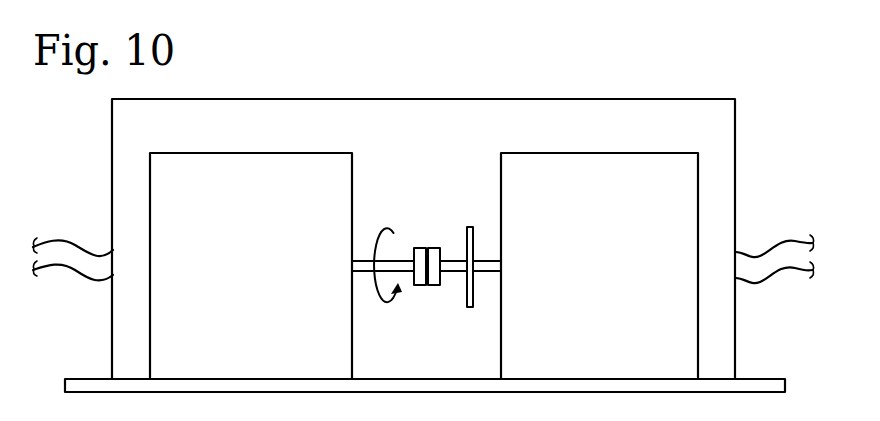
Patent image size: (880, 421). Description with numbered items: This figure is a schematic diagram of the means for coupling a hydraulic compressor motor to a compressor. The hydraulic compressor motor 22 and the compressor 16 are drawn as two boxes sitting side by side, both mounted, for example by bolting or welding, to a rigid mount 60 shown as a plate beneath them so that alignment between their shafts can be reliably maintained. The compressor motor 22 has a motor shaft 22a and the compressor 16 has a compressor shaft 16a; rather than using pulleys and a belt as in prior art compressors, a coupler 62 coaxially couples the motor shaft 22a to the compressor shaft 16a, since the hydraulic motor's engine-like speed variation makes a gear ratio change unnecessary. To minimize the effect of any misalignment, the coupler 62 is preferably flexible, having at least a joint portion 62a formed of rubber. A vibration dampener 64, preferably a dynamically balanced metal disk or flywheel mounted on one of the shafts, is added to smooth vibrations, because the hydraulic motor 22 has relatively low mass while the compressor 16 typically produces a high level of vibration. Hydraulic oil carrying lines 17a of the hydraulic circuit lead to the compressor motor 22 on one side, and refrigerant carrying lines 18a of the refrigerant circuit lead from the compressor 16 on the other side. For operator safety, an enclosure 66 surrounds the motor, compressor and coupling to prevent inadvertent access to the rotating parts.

The compressor 16 is at (689, 183).
The compressor shaft 16a is at (453, 249).
The hydraulic oil carrying lines 17a is at (66, 229).
The refrigerant carrying lines 18a is at (783, 227).
The hydraulic compressor motor 22 is at (342, 183).
The motor shaft 22a is at (367, 240).
The rigid mount 60 is at (748, 379).
The coupler 62 is at (406, 273).
The joint portion 62a is at (426, 250).
The vibration dampener 64 is at (470, 308).
The enclosure 66 is at (725, 129).